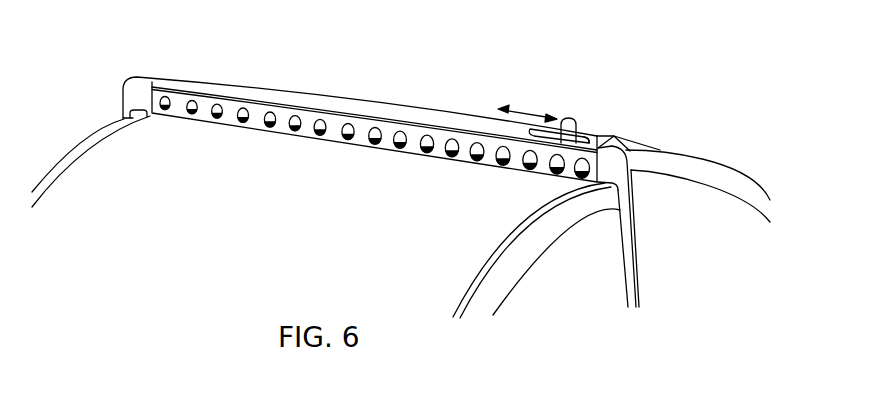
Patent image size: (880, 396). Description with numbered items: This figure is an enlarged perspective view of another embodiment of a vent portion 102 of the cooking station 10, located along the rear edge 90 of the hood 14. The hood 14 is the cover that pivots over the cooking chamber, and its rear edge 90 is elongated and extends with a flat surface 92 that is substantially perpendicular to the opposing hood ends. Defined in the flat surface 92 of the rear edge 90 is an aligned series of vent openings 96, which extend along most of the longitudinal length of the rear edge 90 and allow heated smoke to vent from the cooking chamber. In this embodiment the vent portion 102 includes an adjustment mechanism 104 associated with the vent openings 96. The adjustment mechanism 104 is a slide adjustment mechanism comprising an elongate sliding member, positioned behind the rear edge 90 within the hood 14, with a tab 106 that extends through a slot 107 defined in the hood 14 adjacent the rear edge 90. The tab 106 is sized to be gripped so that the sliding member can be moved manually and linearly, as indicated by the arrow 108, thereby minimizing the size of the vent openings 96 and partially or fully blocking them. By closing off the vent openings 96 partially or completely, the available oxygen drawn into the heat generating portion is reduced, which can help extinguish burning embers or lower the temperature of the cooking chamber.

The cooking station 10 is at (427, 202).
The hood 14 is at (742, 173).
The rear edge 90 is at (402, 124).
The flat surface 92 is at (335, 129).
The vent openings 96 is at (288, 118).
The vent portion 102 is at (456, 164).
The adjustment mechanism 104 is at (580, 123).
The tab 106 is at (570, 117).
The slot 107 is at (527, 133).
The arrow 108 is at (530, 112).